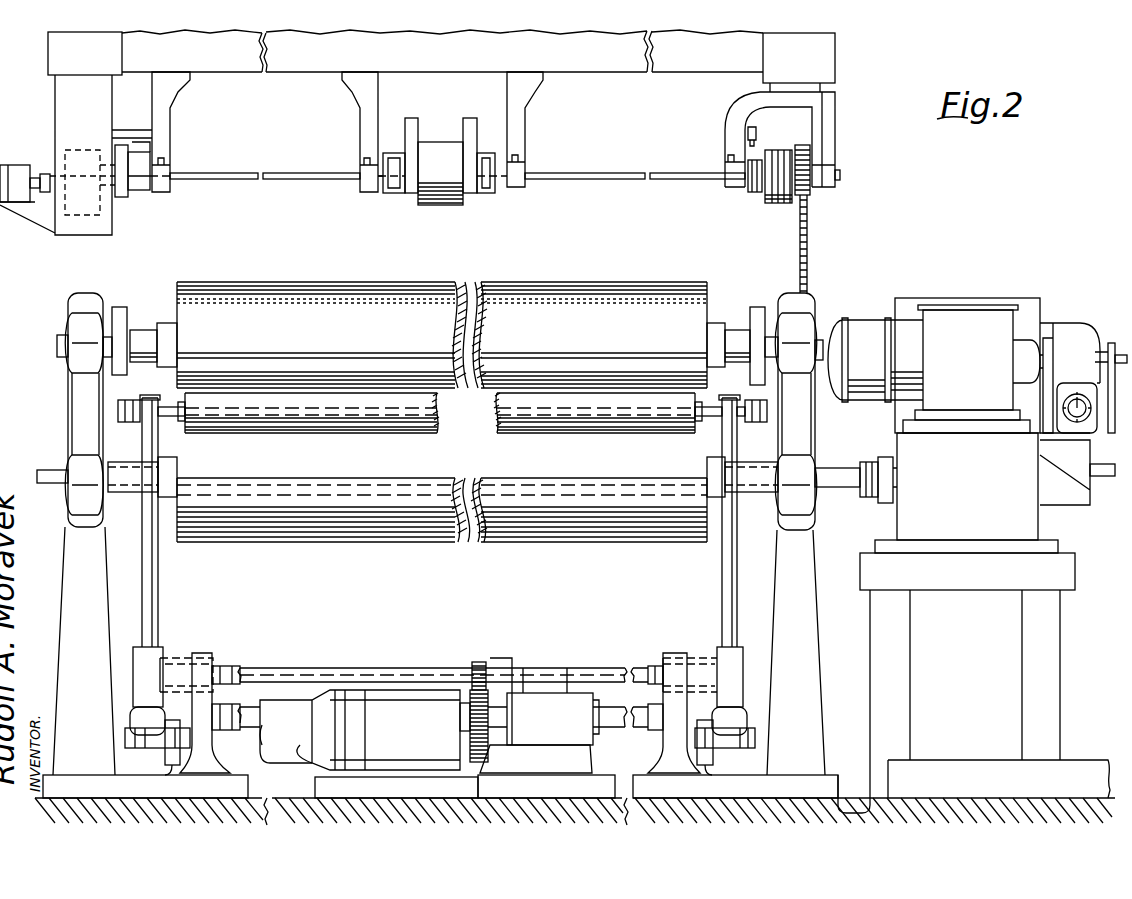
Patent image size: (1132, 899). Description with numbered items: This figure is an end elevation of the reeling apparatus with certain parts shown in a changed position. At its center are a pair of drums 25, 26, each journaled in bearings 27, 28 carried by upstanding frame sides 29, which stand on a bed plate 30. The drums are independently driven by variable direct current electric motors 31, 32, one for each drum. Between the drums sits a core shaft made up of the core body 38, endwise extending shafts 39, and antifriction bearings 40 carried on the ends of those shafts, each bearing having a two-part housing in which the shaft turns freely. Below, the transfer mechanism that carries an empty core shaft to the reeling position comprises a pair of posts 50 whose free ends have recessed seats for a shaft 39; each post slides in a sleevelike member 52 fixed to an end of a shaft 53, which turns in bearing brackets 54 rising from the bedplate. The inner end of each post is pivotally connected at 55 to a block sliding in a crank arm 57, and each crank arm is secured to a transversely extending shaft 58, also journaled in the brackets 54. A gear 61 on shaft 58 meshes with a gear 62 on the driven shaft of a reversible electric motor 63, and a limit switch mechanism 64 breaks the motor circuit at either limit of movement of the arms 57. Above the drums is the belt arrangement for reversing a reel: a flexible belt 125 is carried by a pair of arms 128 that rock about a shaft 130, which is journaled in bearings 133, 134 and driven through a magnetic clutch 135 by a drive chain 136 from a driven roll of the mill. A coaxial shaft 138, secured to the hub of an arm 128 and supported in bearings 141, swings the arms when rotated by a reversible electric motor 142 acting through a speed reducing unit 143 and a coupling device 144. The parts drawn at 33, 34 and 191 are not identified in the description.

The reversible electric motor 142 is at (20, 165).
The speed reducing unit 143 is at (80, 150).
The coupling device 144 is at (124, 197).
The bearings 141 is at (160, 192).
The shaft 138 is at (287, 172).
The bearing bracket 191 is at (368, 192).
The arms 128 is at (410, 118).
The flexible belt 125 is at (433, 206).
The bearing 134 is at (517, 187).
The shaft 130 is at (592, 180).
The bearing 133 is at (722, 187).
The magnetic clutch 135 is at (772, 203).
The drive chain 136 is at (808, 240).
The drum 25 is at (208, 292).
The drum 26 is at (245, 530).
The bearings 27 is at (70, 305).
The bearings 28 is at (72, 440).
The frame sides 29 is at (72, 565).
The bed plate 30 is at (80, 790).
The variable direct current electric motor 31 is at (1080, 330).
The variable direct current electric motor 32 is at (1070, 505).
The speed control dial 33 is at (1063, 383).
The coupling shaft 34 is at (870, 490).
The core body 38 is at (345, 435).
The shaft 39 is at (170, 423).
The antifriction bearing 40 is at (140, 400).
The posts 50 is at (157, 590).
The sleevelike member 52 is at (160, 650).
The shaft 53 is at (288, 666).
The bearing brackets 54 is at (210, 655).
The pivotal connection 55 is at (152, 752).
The crank arm 57 is at (160, 788).
The transversely extending shaft 58 is at (265, 725).
The gear 61 is at (472, 763).
The gear 62 is at (478, 678).
The reversible electric motor 63 is at (394, 695).
The limit switch mechanism 64 is at (538, 698).